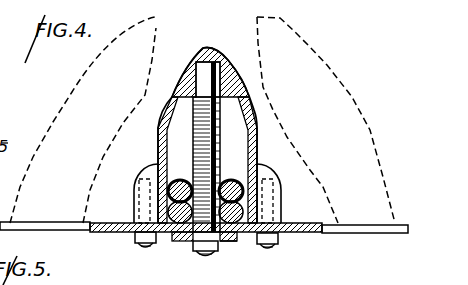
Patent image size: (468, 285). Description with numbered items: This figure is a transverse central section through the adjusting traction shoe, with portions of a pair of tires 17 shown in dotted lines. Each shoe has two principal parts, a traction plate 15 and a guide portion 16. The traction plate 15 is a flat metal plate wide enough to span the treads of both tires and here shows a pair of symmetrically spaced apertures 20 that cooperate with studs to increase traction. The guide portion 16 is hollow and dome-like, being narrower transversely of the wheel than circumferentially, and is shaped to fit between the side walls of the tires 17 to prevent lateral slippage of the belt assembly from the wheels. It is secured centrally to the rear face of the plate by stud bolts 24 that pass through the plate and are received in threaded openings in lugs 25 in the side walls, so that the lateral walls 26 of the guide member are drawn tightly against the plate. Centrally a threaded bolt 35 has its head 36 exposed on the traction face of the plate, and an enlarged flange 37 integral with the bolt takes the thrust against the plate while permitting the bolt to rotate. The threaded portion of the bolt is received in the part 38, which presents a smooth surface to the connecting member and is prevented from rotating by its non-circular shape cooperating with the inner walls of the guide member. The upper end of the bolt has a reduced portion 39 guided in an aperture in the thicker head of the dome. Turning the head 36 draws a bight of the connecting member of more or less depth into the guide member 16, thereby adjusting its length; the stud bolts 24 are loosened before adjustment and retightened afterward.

The traction plate 15 is at (309, 232).
The guide portion 16 is at (258, 131).
The tires 17 is at (153, 22).
The apertures 20 is at (42, 222).
The stud bolts 24 is at (147, 233).
The lugs 25 is at (134, 181).
The lateral walls 26 is at (160, 142).
The threaded bolt 35 is at (217, 123).
The head 36 is at (206, 249).
The flange 37 is at (232, 242).
The part 38 is at (173, 236).
The reduced portion 39 is at (183, 67).